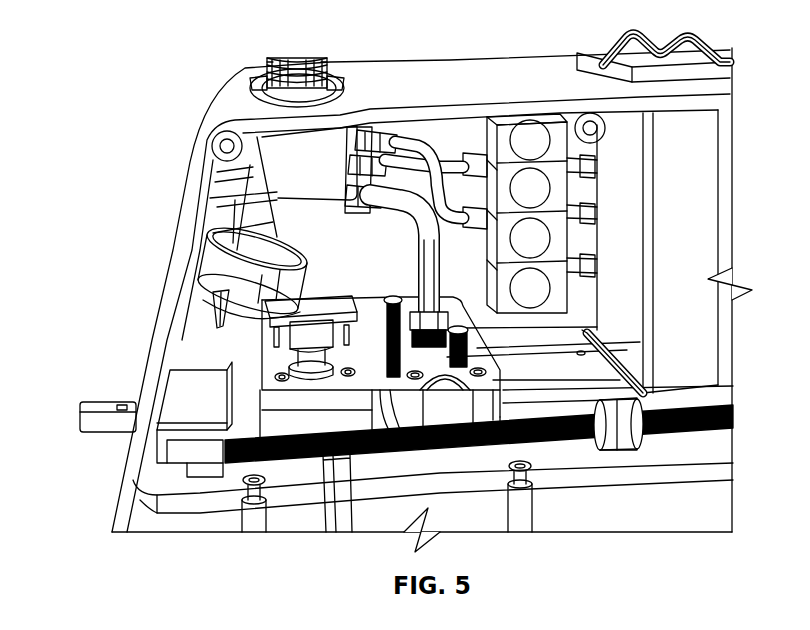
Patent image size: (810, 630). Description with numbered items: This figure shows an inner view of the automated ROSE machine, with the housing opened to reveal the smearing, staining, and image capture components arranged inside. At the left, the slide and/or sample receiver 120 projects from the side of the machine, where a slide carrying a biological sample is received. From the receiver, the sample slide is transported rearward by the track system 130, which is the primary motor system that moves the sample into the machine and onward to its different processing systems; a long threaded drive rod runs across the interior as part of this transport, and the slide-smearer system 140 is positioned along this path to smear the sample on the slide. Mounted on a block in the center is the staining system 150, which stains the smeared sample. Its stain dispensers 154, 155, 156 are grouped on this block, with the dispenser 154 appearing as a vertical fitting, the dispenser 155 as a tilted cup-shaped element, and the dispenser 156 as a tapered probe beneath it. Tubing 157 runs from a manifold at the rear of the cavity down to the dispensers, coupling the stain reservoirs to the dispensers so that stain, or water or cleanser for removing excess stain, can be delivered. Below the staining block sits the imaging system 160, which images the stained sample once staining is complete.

The slide and/or sample receiver 120 is at (100, 394).
The track system 130 is at (206, 482).
The slide-smearer system 140 is at (607, 400).
The staining system 150 is at (444, 410).
The stain dispenser 154 is at (400, 287).
The stain dispenser 155 is at (305, 302).
The stain dispenser 156 is at (275, 340).
The tubing 157 is at (441, 150).
The imaging system 160 is at (294, 392).